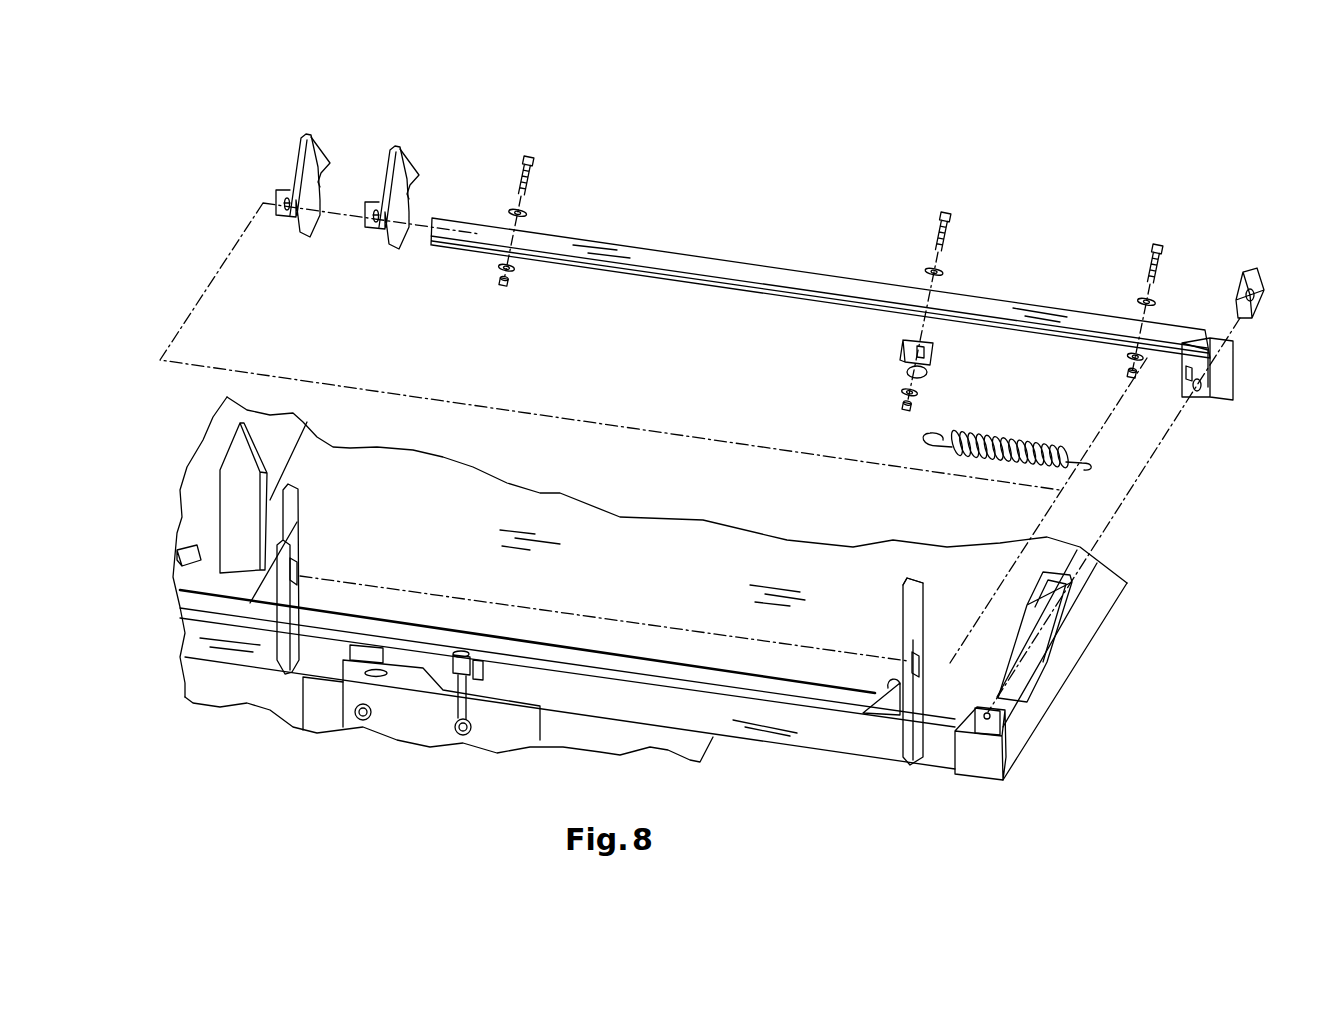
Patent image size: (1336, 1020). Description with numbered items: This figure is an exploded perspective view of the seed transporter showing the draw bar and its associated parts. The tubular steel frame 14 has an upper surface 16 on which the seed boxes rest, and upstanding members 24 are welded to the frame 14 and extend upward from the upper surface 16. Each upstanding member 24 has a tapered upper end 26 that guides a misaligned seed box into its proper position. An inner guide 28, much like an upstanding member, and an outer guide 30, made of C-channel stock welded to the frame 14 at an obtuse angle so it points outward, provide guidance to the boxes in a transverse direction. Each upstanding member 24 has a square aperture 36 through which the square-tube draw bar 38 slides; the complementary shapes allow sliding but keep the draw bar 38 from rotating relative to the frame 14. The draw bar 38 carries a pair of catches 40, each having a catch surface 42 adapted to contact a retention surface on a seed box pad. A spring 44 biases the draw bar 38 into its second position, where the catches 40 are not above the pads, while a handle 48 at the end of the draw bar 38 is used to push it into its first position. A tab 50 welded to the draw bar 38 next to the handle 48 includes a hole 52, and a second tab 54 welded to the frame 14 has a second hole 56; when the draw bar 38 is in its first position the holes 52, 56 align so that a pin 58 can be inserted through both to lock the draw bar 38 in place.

The frame 14 is at (1053, 687).
The upper surface 16 is at (647, 560).
The upstanding member 24 is at (922, 687).
The tapered upper end 26 is at (930, 618).
The inner guide 28 is at (237, 488).
The outer guide 30 is at (1037, 600).
The aperture 36 is at (923, 658).
The draw bar 38 is at (750, 272).
The catch 40 is at (390, 147).
The catch surface 42 is at (417, 188).
The spring 44 is at (1022, 433).
The handle 48 is at (1233, 368).
The tab 50 is at (1187, 375).
The hole 52 is at (1197, 393).
The second tab 54 is at (1003, 724).
The second hole 56 is at (982, 727).
The pin 58 is at (1262, 300).